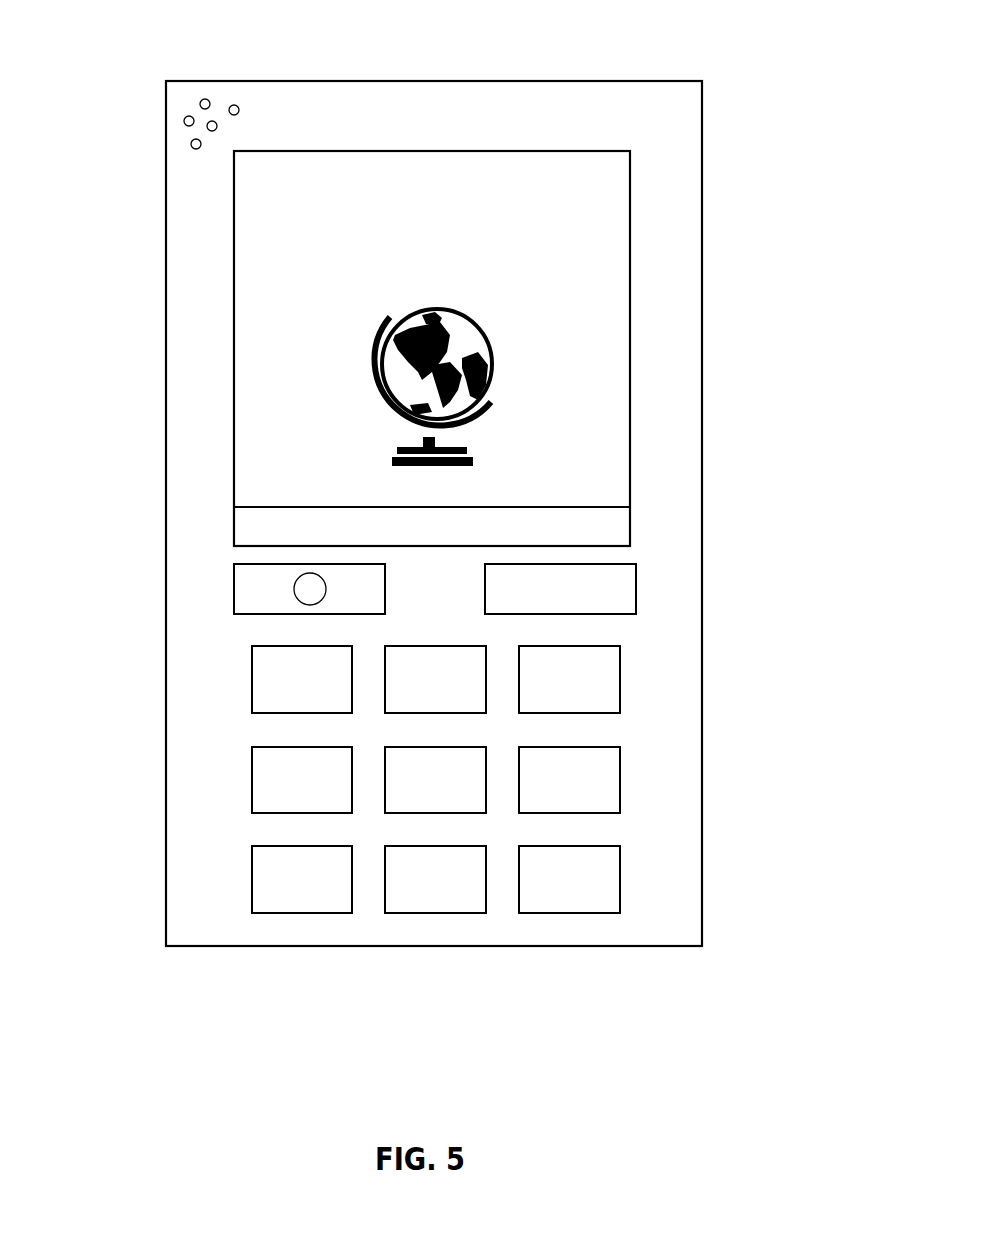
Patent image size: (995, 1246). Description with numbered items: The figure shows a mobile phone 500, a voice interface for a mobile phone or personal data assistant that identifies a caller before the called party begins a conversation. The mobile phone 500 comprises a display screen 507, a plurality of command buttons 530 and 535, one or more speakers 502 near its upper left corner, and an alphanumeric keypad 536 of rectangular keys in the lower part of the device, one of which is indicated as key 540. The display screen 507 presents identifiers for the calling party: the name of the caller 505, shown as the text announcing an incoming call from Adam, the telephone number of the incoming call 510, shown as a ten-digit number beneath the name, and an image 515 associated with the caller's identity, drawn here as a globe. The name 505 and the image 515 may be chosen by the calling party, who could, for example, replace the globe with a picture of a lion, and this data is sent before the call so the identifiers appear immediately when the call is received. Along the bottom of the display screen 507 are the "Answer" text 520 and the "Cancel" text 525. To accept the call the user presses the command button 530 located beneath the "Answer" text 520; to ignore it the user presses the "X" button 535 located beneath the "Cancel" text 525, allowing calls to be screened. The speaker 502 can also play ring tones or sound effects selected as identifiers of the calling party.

The mobile phone 500 is at (622, 1031).
The speaker 502 is at (238, 106).
The name of the caller 505 is at (535, 230).
The display screen 507 is at (300, 382).
The telephone number of the incoming call 510 is at (358, 257).
The image associated with the identity of the caller 515 is at (497, 345).
The "Answer" text 520 is at (259, 523).
The "Cancel" text 525 is at (612, 522).
The command button 530 is at (235, 595).
The "X" button 535 is at (587, 597).
The alphanumeric keypad 536 is at (620, 920).
The keypad key 540 is at (570, 879).